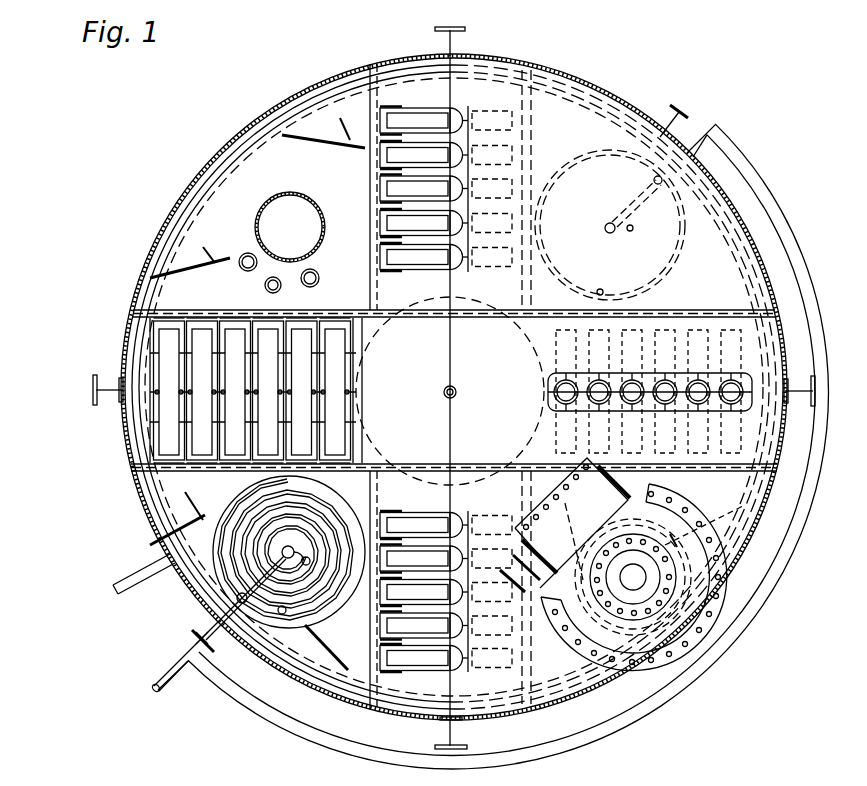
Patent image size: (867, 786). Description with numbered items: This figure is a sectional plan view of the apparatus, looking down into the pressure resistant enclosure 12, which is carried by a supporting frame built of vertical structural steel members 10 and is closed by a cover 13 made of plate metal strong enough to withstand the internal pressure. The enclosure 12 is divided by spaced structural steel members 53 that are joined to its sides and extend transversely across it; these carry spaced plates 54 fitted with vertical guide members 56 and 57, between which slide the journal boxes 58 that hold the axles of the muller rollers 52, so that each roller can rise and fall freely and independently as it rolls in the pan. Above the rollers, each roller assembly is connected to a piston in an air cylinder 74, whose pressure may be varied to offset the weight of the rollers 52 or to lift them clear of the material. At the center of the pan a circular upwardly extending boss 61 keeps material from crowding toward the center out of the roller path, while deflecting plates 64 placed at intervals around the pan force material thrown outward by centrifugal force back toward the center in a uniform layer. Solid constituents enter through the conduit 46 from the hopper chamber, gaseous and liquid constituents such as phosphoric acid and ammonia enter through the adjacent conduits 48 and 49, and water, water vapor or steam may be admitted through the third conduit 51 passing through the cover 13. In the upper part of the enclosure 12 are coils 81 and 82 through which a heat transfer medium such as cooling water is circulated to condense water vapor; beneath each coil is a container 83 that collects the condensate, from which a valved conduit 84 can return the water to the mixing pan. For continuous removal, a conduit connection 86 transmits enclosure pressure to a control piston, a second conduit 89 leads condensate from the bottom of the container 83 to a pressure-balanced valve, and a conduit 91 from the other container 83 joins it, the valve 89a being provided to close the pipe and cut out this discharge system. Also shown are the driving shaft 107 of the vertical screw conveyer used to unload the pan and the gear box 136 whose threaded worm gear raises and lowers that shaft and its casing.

The vertical structural steel members 10 is at (462, 30).
The pressure resistant enclosure 12 is at (336, 94).
The cover 13 is at (558, 86).
The conduit 46 is at (270, 200).
The conduit 48 is at (249, 254).
The conduit 49 is at (265, 287).
The third conduit 51 is at (318, 273).
The muller rollers 52 is at (392, 188).
The spaced structural steel members 53 is at (370, 210).
The spaced plates 54 is at (350, 356).
The vertical guide member 56 is at (357, 372).
The vertical guide member 57 is at (350, 421).
The journal boxes 58 is at (352, 392).
The circular upwardly extending boss 61 is at (472, 300).
The deflecting plates 64 is at (340, 148).
The air cylinder 74 is at (458, 118).
The coil 81 is at (254, 504).
The coil 82 is at (604, 290).
The container 83 is at (664, 282).
The valved conduit 84 is at (604, 229).
The conduit connection 86 is at (118, 574).
The second conduit 89 is at (186, 650).
The valve 89a is at (187, 624).
The conduit 91 is at (303, 737).
The driving shaft 107 is at (640, 580).
The gear box 136 is at (683, 627).